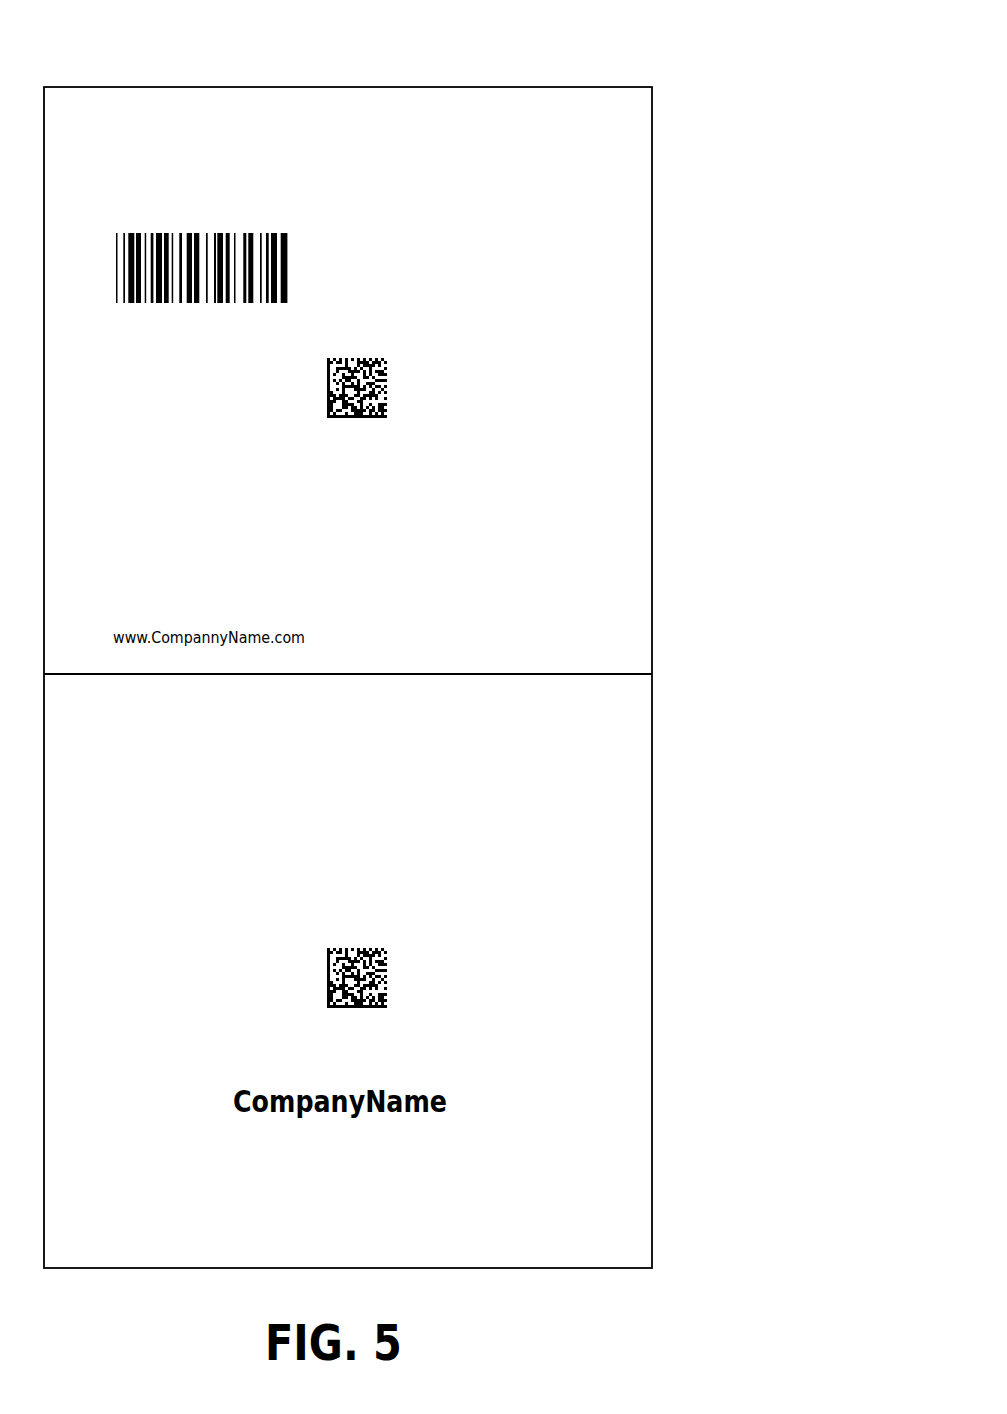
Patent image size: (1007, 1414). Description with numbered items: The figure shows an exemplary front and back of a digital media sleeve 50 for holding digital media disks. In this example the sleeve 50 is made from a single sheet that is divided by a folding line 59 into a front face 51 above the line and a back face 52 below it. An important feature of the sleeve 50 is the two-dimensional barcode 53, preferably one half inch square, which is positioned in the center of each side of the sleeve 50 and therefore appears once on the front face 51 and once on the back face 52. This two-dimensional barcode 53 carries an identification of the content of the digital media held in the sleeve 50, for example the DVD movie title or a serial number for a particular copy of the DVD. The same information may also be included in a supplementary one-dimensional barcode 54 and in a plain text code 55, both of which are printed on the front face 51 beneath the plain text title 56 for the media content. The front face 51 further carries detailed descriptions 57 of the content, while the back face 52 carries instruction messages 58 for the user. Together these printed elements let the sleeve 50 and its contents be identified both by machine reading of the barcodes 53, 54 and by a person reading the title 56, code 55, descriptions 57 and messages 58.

The digital media sleeve 50 is at (597, 63).
The front face 51 is at (632, 202).
The back face 52 is at (624, 968).
The 2-D barcode 53 is at (390, 376).
The 1-D barcode 54 is at (223, 308).
The plain text code 55 is at (415, 255).
The plain text title 56 is at (225, 155).
The detailed descriptions 57 is at (103, 588).
The instruction messages 58 is at (120, 722).
The folding line 59 is at (581, 675).